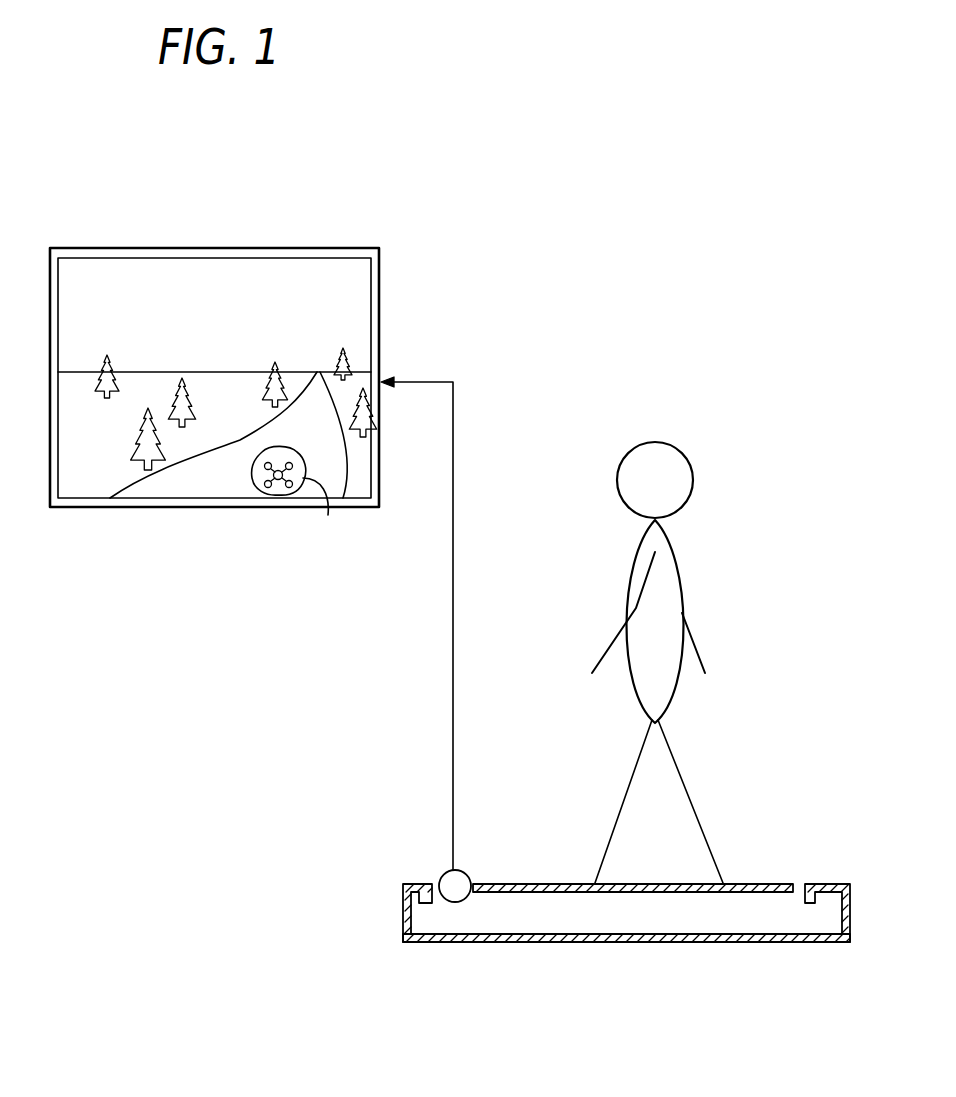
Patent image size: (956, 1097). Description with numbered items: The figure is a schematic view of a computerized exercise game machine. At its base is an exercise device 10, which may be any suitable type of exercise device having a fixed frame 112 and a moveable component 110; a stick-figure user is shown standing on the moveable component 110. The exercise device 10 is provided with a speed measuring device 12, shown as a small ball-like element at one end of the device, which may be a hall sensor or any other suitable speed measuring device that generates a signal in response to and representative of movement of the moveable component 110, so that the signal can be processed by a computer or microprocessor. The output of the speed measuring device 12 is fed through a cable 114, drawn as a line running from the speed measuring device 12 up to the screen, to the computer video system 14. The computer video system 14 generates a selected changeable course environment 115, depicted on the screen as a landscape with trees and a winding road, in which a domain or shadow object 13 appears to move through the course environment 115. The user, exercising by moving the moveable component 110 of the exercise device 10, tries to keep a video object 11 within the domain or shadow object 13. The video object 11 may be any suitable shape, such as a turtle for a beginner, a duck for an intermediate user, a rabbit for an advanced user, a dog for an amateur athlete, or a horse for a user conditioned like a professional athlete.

The exercise device 10 is at (694, 944).
The video object 11 is at (253, 495).
The speed measuring device 12 is at (462, 902).
The domain or shadow object 13 is at (328, 515).
The computer video system 14 is at (129, 248).
The moveable component 110 is at (740, 883).
The fixed frame 112 is at (540, 943).
The cable 114 is at (455, 452).
The course environment 115 is at (338, 403).